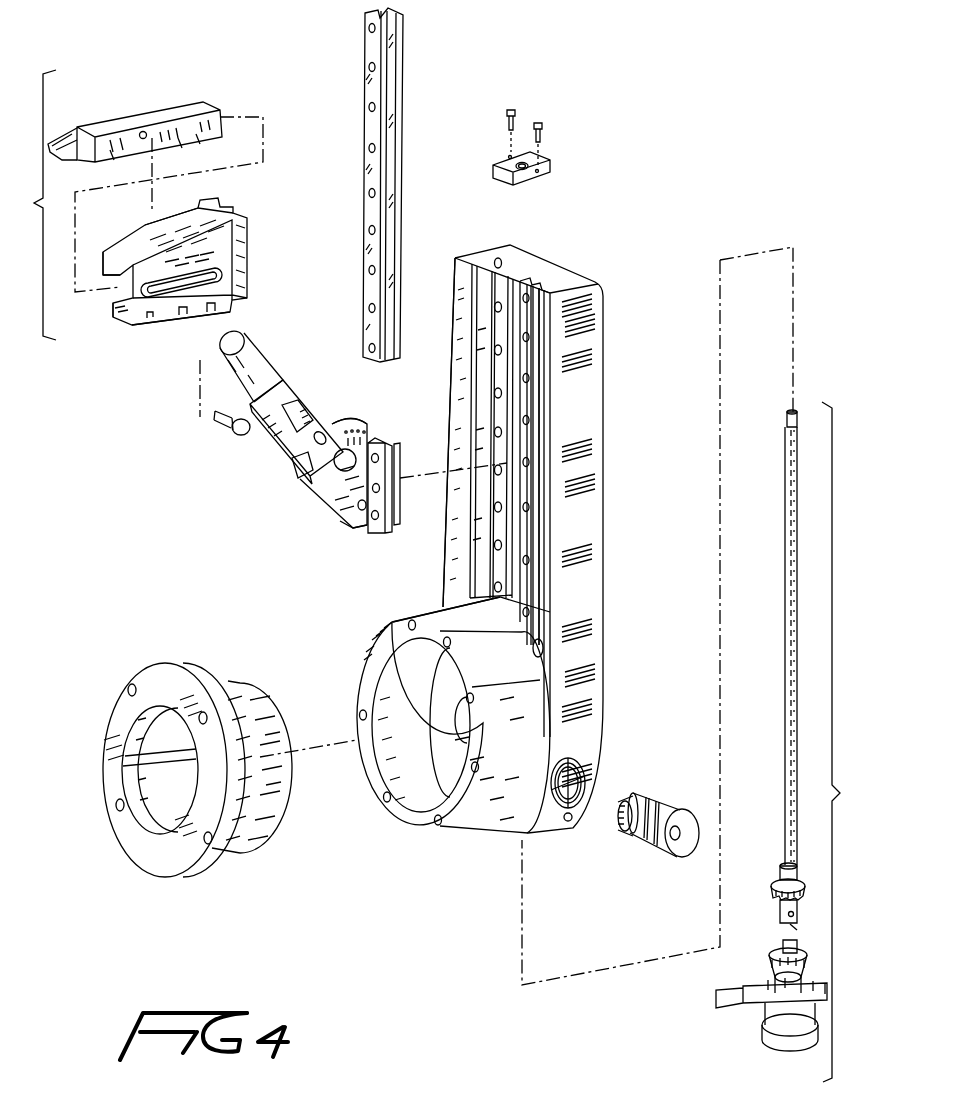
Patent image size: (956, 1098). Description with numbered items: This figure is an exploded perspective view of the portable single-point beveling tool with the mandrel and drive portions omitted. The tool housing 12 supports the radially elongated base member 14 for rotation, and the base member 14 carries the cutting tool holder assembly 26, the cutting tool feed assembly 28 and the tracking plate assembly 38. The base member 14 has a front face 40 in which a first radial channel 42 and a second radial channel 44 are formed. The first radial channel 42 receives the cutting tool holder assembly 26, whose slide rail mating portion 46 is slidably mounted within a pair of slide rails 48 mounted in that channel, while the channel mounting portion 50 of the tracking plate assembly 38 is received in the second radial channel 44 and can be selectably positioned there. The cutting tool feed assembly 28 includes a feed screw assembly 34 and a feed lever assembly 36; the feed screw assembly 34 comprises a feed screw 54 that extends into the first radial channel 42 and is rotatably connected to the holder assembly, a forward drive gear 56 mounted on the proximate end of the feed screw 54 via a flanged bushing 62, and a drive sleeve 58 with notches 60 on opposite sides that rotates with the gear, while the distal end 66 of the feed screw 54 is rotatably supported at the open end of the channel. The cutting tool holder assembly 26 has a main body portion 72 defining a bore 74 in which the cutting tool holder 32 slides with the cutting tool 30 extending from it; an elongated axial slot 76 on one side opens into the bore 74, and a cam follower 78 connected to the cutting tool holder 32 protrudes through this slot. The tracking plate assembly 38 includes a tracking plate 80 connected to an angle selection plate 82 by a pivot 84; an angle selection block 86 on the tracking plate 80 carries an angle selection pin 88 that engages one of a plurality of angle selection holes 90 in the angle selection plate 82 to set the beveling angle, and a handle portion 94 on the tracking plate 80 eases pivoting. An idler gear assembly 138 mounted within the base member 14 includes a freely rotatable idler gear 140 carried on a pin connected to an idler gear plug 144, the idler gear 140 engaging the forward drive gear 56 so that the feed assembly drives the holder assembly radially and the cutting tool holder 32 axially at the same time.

The tool housing 12 is at (187, 878).
The base member 14 is at (600, 288).
The cutting tool holder assembly 26 is at (32, 205).
The cutting tool feed assembly 28 is at (844, 742).
The cutting tool 30 is at (50, 128).
The cutting tool holder 32 is at (162, 108).
The feed screw assembly 34 is at (745, 797).
The feed lever assembly 36 is at (747, 1030).
The tracking plate assembly 38 is at (276, 481).
The front face 40 is at (447, 550).
The first radial channel 42 is at (496, 578).
The second radial channel 44 is at (536, 358).
The slide rail mating portion 46 is at (185, 301).
The slide rails 48 is at (363, 251).
The channel mounting portion 50 is at (402, 457).
The feed screw 54 is at (785, 649).
The forward drive gear 56 is at (770, 896).
The drive sleeve 58 is at (777, 920).
The notches 60 is at (793, 928).
The flanged bushing 62 is at (779, 881).
The distal end 66 is at (786, 421).
The main body portion 72 is at (165, 291).
The bore 74 is at (108, 296).
The axial slot 76 is at (140, 318).
The cam follower 78 is at (222, 418).
The tracking plate 80 is at (293, 378).
The angle selection plate 82 is at (334, 512).
The pivot 84 is at (347, 530).
The angle selection block 86 is at (318, 407).
The angle selection pin 88 is at (296, 482).
The angle selection holes 90 is at (370, 421).
The handle portion 94 is at (200, 293).
The idler gear assembly 138 is at (630, 808).
The idler gear 140 is at (624, 823).
The idler gear plug 144 is at (664, 856).